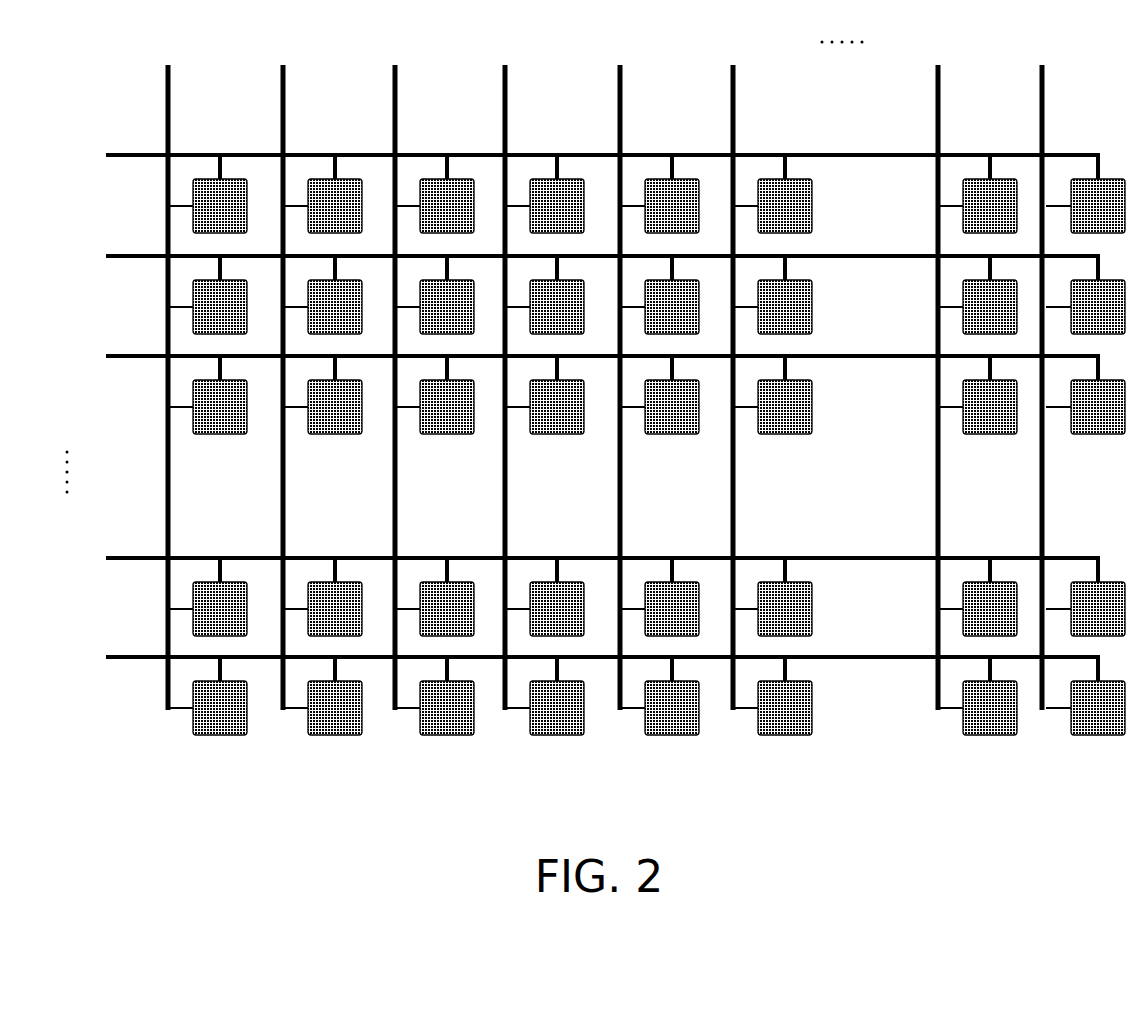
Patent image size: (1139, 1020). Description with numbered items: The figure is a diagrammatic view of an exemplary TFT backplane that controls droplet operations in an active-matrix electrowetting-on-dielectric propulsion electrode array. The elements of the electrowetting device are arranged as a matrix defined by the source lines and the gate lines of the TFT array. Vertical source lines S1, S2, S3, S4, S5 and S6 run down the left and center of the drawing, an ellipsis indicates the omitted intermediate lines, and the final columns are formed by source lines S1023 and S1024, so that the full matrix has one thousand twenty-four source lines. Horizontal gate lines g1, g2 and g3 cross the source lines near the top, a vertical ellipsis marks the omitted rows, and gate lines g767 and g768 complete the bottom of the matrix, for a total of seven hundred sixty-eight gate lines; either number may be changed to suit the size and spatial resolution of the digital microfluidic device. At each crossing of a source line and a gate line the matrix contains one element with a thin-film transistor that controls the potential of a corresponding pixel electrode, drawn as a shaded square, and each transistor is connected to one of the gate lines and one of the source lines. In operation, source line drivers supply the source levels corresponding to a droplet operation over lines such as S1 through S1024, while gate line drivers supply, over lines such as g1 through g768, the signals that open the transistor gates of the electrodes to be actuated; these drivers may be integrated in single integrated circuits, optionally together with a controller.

The source line S1 is at (165, 371).
The source line S2 is at (280, 371).
The source line S3 is at (392, 371).
The source line S4 is at (508, 371).
The source line S5 is at (621, 371).
The source line S6 is at (733, 371).
The source line S1023 is at (953, 371).
The source line S1024 is at (1067, 371).
The gate line g1 is at (577, 161).
The gate line g2 is at (577, 262).
The gate line g3 is at (577, 362).
The gate line g767 is at (571, 564).
The gate line g768 is at (571, 663).